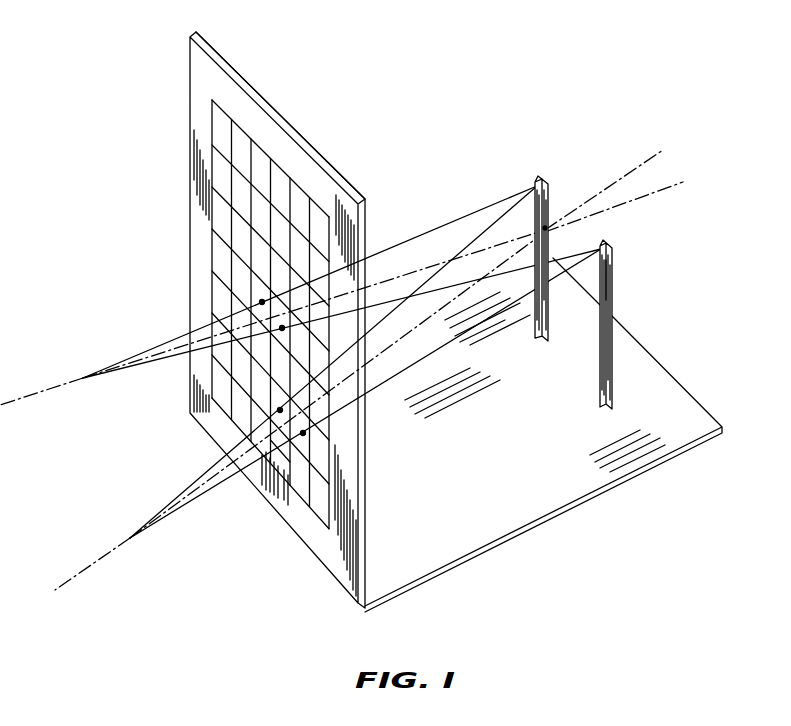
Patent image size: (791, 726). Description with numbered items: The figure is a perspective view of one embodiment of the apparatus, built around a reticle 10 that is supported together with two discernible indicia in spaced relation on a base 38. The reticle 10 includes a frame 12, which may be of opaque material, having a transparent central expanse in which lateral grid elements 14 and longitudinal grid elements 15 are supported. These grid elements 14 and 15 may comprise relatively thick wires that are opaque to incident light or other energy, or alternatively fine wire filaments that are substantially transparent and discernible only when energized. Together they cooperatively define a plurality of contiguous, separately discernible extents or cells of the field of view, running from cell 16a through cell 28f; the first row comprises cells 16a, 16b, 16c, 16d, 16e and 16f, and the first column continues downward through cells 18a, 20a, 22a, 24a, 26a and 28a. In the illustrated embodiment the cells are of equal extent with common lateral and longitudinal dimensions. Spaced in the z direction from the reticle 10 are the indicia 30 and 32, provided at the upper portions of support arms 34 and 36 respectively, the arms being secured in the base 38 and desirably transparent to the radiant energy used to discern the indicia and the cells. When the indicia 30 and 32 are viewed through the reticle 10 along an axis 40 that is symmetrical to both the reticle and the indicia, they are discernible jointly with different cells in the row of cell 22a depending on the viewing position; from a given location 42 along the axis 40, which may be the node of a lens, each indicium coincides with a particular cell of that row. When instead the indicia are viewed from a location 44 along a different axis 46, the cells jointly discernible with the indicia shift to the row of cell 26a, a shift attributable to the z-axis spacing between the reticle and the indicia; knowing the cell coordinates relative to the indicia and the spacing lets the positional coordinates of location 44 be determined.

The reticle 10 is at (223, 55).
The frame 12 is at (200, 92).
The lateral grid element 14 is at (285, 316).
The longitudinal grid element 15 is at (280, 457).
The cell 16a is at (223, 117).
The cell 16b is at (240, 137).
The cell 16c is at (262, 162).
The cell 16d is at (282, 183).
The cell 16e is at (302, 203).
The cell 16f is at (320, 226).
The cell 18a is at (222, 152).
The cell 20a is at (222, 197).
The cell 22a is at (222, 238).
The cell 24a is at (222, 278).
The cell 26a is at (222, 318).
The cell 28a is at (222, 388).
The cell 28f is at (320, 503).
The discernible indicium 30 is at (537, 180).
The discernible indicium 32 is at (600, 242).
The support arm 34 is at (551, 213).
The support arm 36 is at (612, 287).
The base 38 is at (500, 513).
The axis 40 is at (660, 190).
The location 42 is at (83, 378).
The location 44 is at (130, 538).
The axis 46 is at (642, 163).